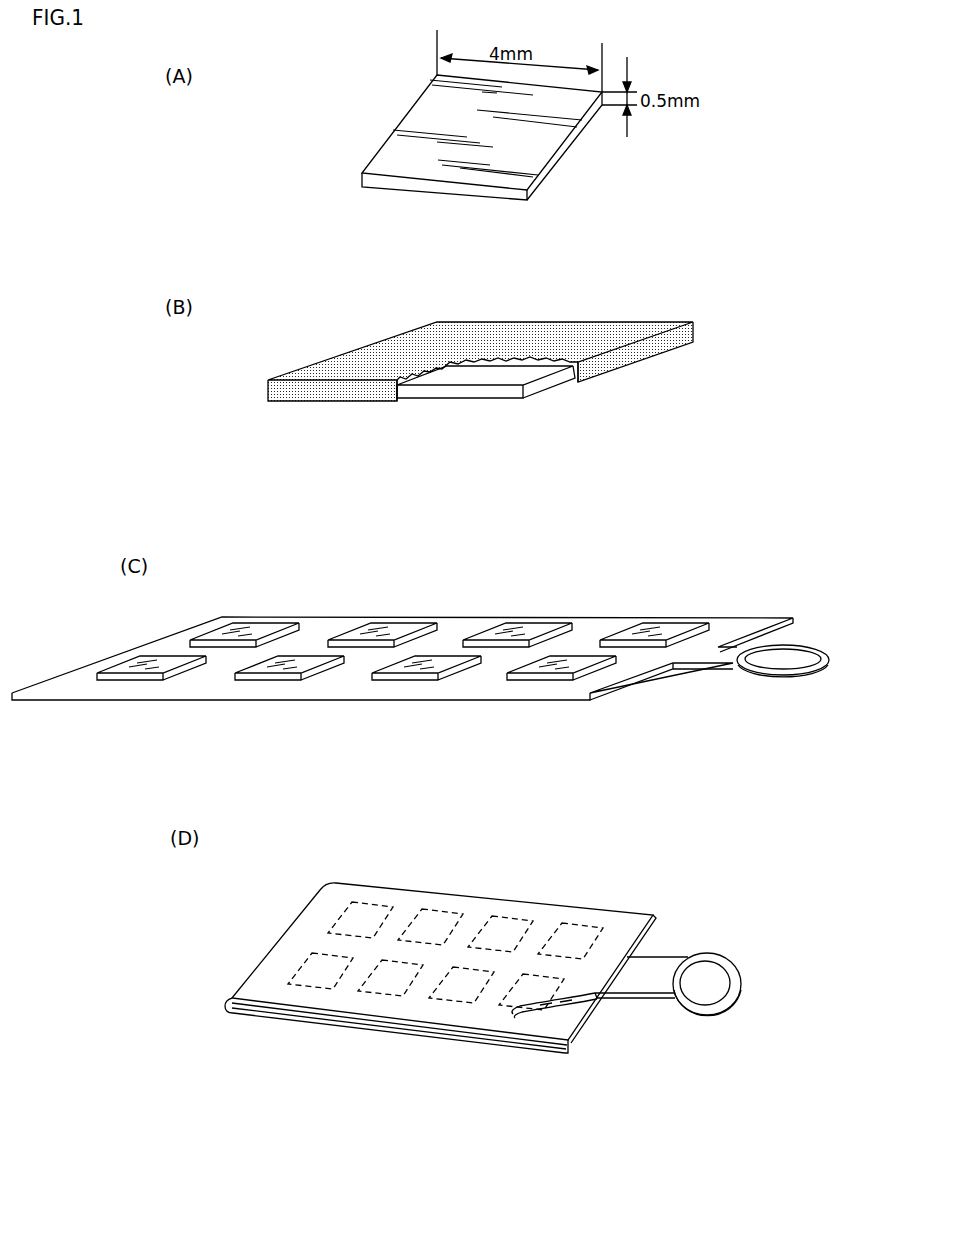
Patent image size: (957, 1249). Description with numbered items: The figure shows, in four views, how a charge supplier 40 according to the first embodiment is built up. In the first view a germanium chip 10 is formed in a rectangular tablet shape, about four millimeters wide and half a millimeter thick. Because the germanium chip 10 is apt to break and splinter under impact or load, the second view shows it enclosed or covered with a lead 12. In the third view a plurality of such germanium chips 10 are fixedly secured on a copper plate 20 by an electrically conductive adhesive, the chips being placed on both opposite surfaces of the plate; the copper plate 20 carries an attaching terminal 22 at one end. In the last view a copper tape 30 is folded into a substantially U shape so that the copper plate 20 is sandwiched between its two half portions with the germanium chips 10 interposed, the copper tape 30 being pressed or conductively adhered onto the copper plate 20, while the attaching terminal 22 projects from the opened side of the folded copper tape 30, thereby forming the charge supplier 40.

The germanium chip 10 is at (423, 165).
The lead 12 is at (340, 364).
The copper plate 20 is at (737, 625).
The attaching terminal 22 is at (825, 647).
The copper tape 30 is at (622, 918).
The charge supplier 40 is at (452, 853).